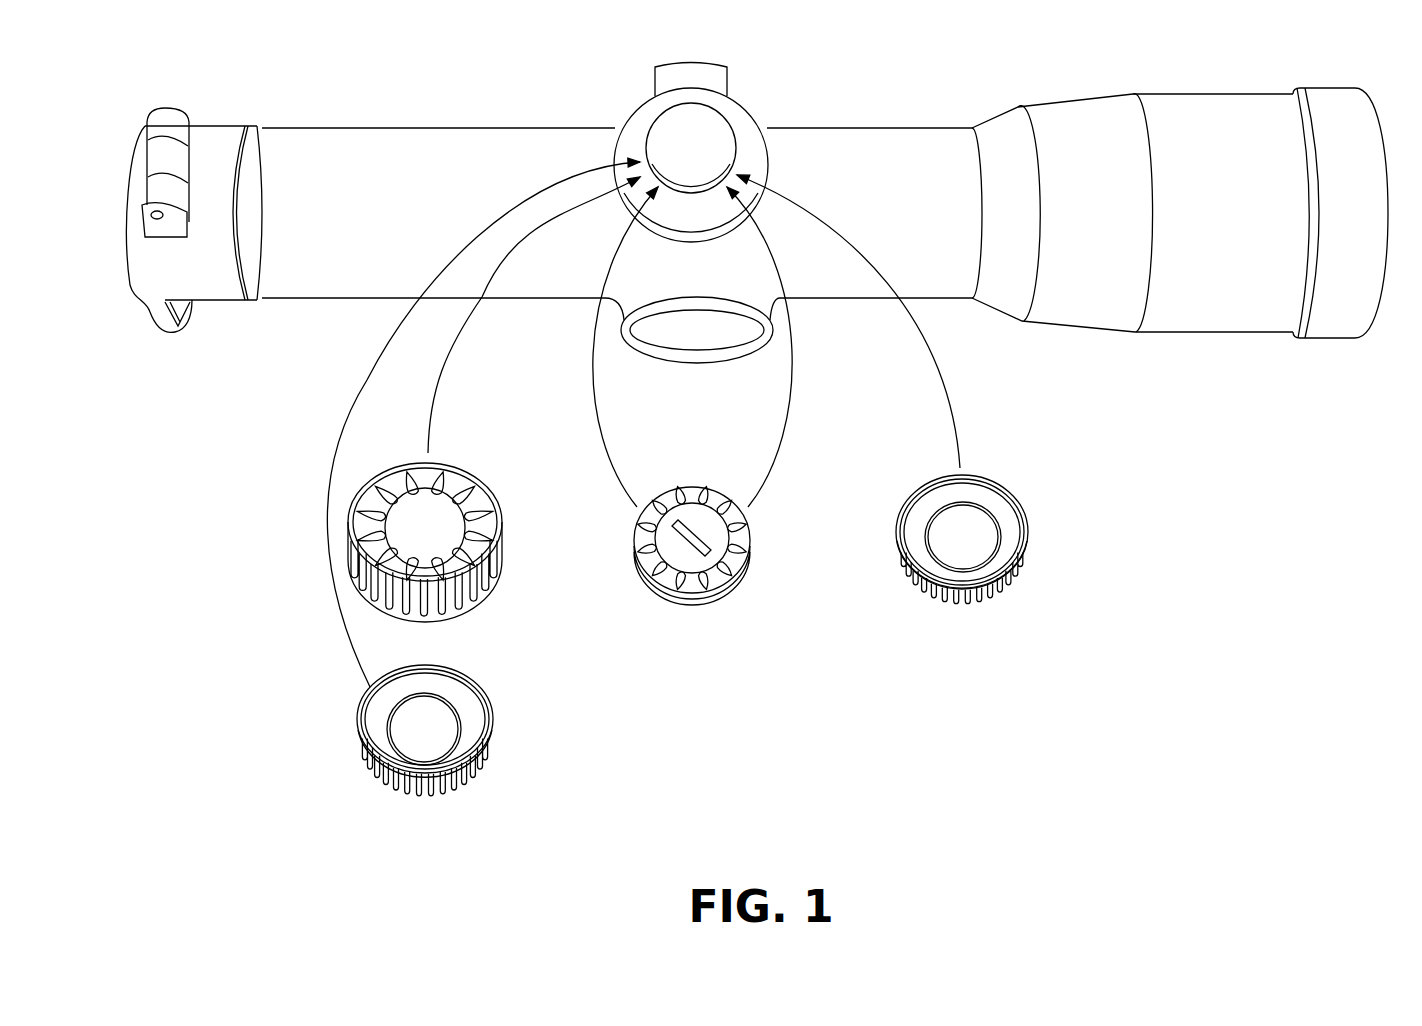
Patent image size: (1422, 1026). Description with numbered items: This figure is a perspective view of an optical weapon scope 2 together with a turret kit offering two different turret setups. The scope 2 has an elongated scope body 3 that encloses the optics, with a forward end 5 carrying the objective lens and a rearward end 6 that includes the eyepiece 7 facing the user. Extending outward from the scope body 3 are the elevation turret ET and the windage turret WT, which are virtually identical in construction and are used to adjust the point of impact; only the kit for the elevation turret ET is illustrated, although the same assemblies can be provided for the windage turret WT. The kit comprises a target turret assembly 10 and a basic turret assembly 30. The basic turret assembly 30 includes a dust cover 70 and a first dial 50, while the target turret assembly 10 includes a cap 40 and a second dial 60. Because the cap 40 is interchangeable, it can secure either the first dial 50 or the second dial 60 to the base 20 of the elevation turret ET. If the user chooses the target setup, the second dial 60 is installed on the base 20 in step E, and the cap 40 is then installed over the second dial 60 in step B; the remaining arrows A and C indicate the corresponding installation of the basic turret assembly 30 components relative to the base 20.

The scope 2 is at (275, 90).
The scope body 3 is at (332, 140).
The forward end 5 is at (102, 296).
The rearward end 6 is at (1372, 322).
The eyepiece 7 is at (1278, 335).
The target turret assembly 10 is at (1050, 618).
The base 20 is at (774, 142).
The basic turret assembly 30 is at (315, 442).
The cap 40 is at (752, 543).
The first dial 50 is at (490, 722).
The second dial 60 is at (1027, 527).
The dust cover 70 is at (500, 527).
The elevation turret ET is at (674, 98).
The windage turret WT is at (737, 70).
The installation direction A is at (365, 382).
The step B is at (612, 457).
The installation direction C is at (430, 418).
The step E is at (953, 415).